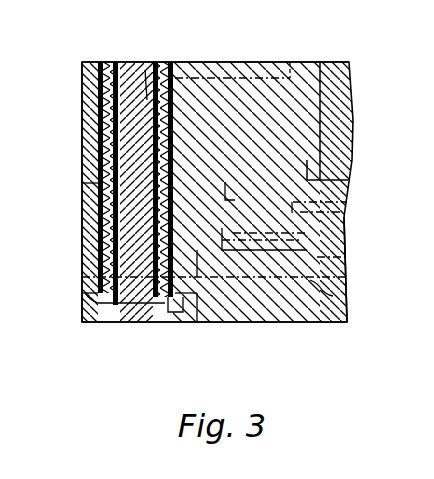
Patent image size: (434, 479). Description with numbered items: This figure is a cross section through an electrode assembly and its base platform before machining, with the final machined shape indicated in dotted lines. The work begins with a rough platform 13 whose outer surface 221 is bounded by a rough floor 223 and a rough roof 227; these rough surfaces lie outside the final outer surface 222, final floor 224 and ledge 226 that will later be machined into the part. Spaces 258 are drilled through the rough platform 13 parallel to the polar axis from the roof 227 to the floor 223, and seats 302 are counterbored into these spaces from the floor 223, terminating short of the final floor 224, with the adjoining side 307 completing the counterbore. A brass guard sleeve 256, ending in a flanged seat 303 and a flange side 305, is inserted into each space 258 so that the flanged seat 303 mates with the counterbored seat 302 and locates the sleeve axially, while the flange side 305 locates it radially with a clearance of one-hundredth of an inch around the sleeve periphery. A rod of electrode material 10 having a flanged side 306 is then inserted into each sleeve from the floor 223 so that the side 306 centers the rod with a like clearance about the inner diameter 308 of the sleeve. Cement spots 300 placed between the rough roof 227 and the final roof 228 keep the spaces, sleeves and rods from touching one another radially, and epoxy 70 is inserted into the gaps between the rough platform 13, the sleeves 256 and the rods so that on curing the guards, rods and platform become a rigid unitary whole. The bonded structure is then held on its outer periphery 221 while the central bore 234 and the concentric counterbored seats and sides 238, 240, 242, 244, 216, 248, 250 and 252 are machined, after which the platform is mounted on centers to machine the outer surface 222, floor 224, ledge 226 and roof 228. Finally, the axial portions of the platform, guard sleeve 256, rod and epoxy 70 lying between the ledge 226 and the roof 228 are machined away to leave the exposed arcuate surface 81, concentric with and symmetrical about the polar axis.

The rough platform 13 is at (301, 74).
The cement spots 300 is at (165, 62).
The outer surface 221 is at (82, 76).
The roof 227 is at (247, 62).
The exposed arcuate surface 81 is at (122, 107).
The roof 228 is at (232, 97).
The bore 234 is at (320, 128).
The brass guard sleeve 256 is at (120, 152).
The connector 10 is at (170, 130).
The spaces 258 is at (178, 192).
The counterbored seat 238 is at (307, 160).
The counterbore side 240 is at (308, 199).
The recess 216 is at (222, 195).
The counterbored seat 242 is at (292, 205).
The counterbore side 244 is at (297, 232).
The counterbore side 248 is at (232, 250).
The counterbore side 252 is at (212, 269).
The counterbored seat 250 is at (347, 257).
The floor 224 is at (333, 296).
The floor 223 is at (312, 323).
The ledge 226 is at (82, 185).
The epoxy 70 is at (98, 229).
The outer surface 222 is at (82, 251).
The flanged seat 303 is at (82, 317).
The flange side 305 is at (81, 321).
The flanged side 306 is at (106, 322).
The inner diameter 308 is at (170, 314).
The flange 307 is at (185, 320).
The counterbored seat 302 is at (190, 301).